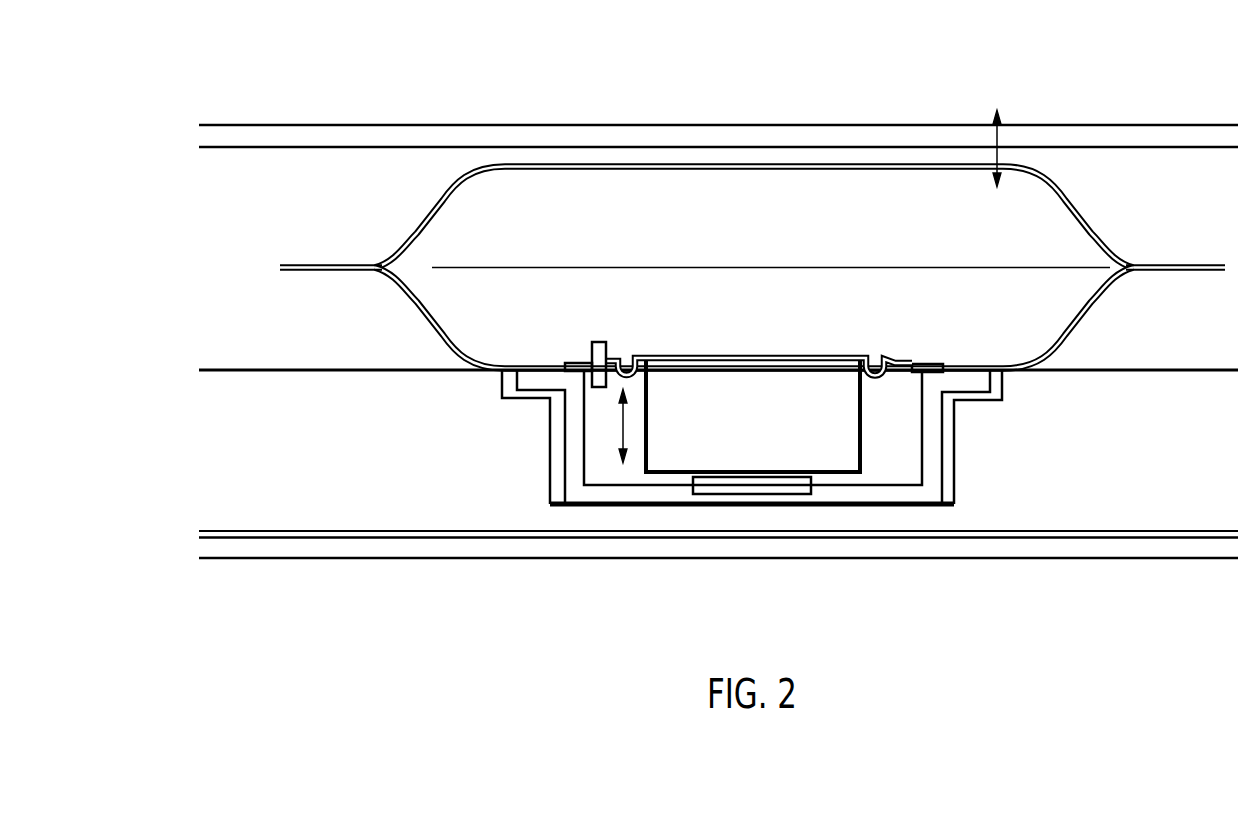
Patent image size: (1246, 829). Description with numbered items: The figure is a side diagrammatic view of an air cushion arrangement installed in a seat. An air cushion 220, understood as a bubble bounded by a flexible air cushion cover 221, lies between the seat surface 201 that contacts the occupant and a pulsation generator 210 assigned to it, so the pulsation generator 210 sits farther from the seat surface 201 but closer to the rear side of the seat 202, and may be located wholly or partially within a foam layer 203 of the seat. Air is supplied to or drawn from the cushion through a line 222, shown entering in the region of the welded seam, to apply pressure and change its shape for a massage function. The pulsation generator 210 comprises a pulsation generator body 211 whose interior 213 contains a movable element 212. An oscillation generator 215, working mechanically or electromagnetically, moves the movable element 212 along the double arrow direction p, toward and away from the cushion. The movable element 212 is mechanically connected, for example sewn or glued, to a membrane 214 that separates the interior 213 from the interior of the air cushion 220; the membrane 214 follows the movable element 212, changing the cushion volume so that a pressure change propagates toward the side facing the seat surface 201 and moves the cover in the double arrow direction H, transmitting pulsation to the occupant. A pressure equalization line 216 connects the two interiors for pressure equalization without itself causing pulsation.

The seat surface 201 is at (960, 74).
The rear side of the seat 202 is at (788, 550).
The foam layer 203 is at (270, 500).
The pulsation generator 210 is at (600, 506).
The pulsation generator body 211 is at (950, 477).
The movable element 212 is at (847, 475).
The interior of the pulsation generator body 213 is at (889, 455).
The membrane 214 is at (885, 377).
The oscillation generator 215 is at (720, 492).
The pressure equalization line 216 is at (599, 342).
The air cushion 220 is at (752, 222).
The air cushion cover 221 is at (425, 221).
The line 222 is at (308, 262).
The double arrow direction p P is at (622, 426).
The double arrow direction H is at (998, 133).